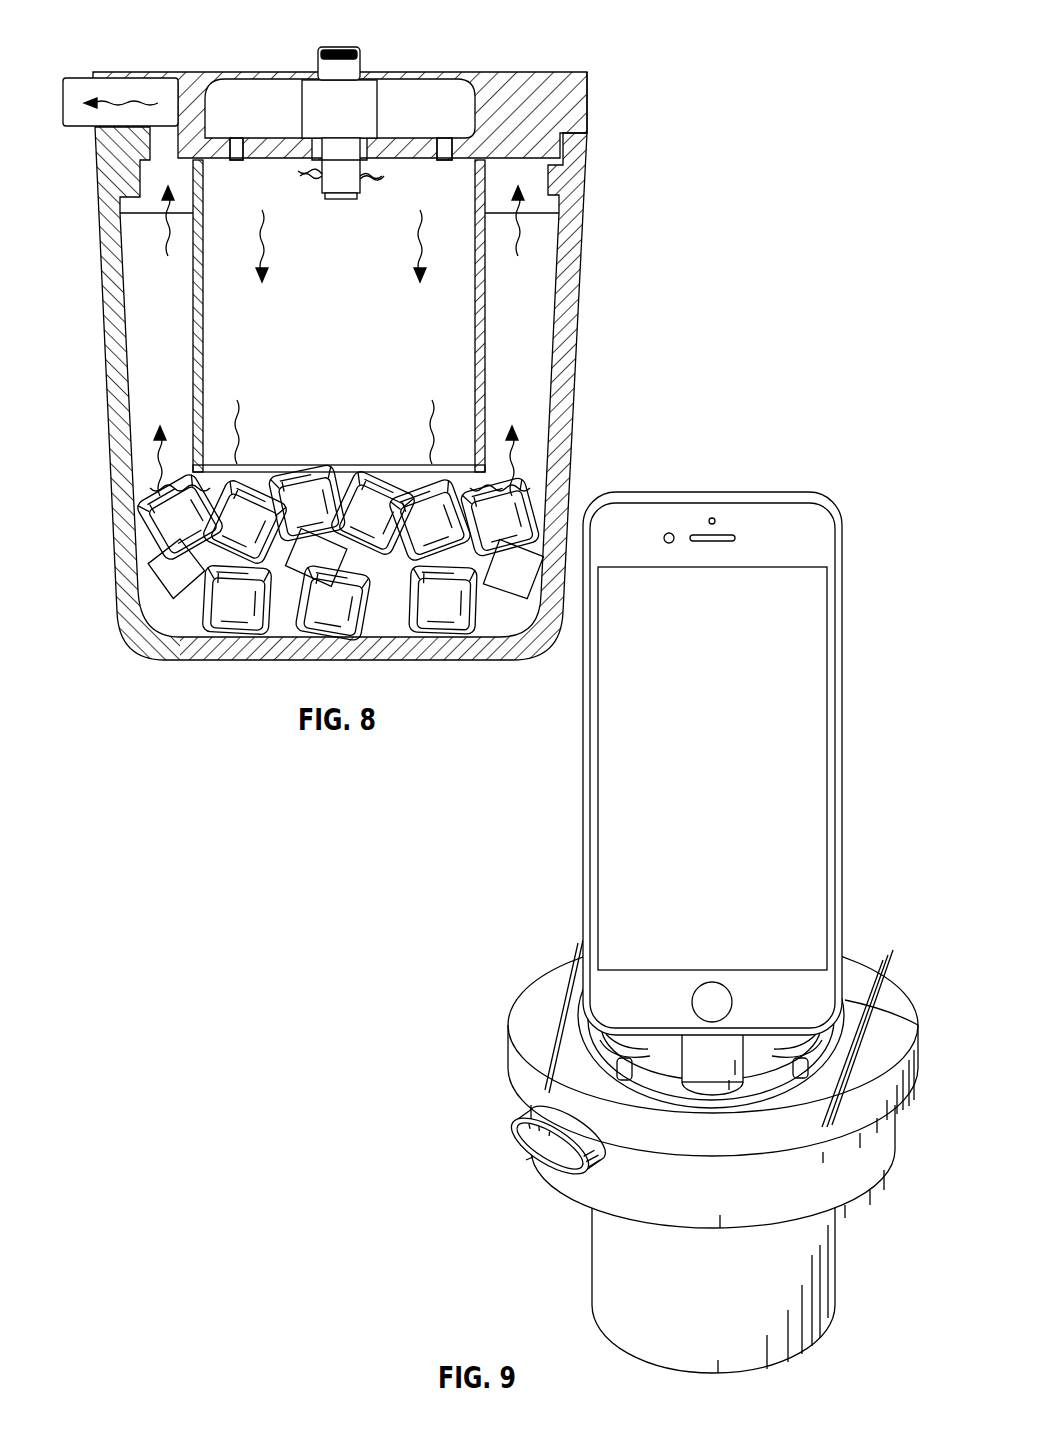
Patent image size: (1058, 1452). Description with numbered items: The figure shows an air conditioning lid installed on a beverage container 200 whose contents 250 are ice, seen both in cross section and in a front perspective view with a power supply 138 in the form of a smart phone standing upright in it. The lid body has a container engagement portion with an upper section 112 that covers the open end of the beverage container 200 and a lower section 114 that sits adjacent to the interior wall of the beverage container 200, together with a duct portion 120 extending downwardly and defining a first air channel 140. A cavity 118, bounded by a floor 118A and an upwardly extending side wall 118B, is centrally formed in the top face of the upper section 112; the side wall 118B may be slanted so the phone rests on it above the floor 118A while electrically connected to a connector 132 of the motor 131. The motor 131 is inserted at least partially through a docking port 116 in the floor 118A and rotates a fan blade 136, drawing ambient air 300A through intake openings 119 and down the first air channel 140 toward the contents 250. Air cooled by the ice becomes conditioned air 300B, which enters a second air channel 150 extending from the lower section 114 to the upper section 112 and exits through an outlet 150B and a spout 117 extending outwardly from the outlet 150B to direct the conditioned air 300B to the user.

In FIG. 9, the upper section 112 is at (518, 1072).
In FIG. 9, the lower section 114 is at (843, 1190).
In FIG. 8, the docking port 116 is at (293, 146).
In FIG. 8, the spout 117 is at (80, 78).
In FIG. 9, the spout 117 is at (528, 1110).
In FIG. 8, the cavity 118 is at (218, 84).
In FIG. 9, the floor 118A is at (772, 1072).
In FIG. 9, the side wall 118B is at (837, 1027).
In FIG. 8, the intake opening 119 is at (443, 130).
In FIG. 9, the intake opening 119 is at (623, 1052).
In FIG. 8, the duct portion 120 is at (578, 355).
In FIG. 9, the duct portion 120 is at (605, 1268).
In FIG. 8, the motor 131 is at (312, 90).
In FIG. 8, the connector 132 is at (364, 55).
In FIG. 8, the fan blade 136 is at (340, 196).
In FIG. 9, the power supply 138 is at (583, 786).
In FIG. 8, the first air channel 140 is at (212, 306).
In FIG. 8, the second air channel 150 is at (155, 165).
In FIG. 9, the outlet 150B is at (527, 1162).
In FIG. 8, the beverage container 200 is at (590, 180).
In FIG. 8, the contents 250 is at (227, 610).
In FIG. 8, the ambient air 300A is at (272, 272).
In FIG. 8, the conditioned air 300B is at (565, 210).